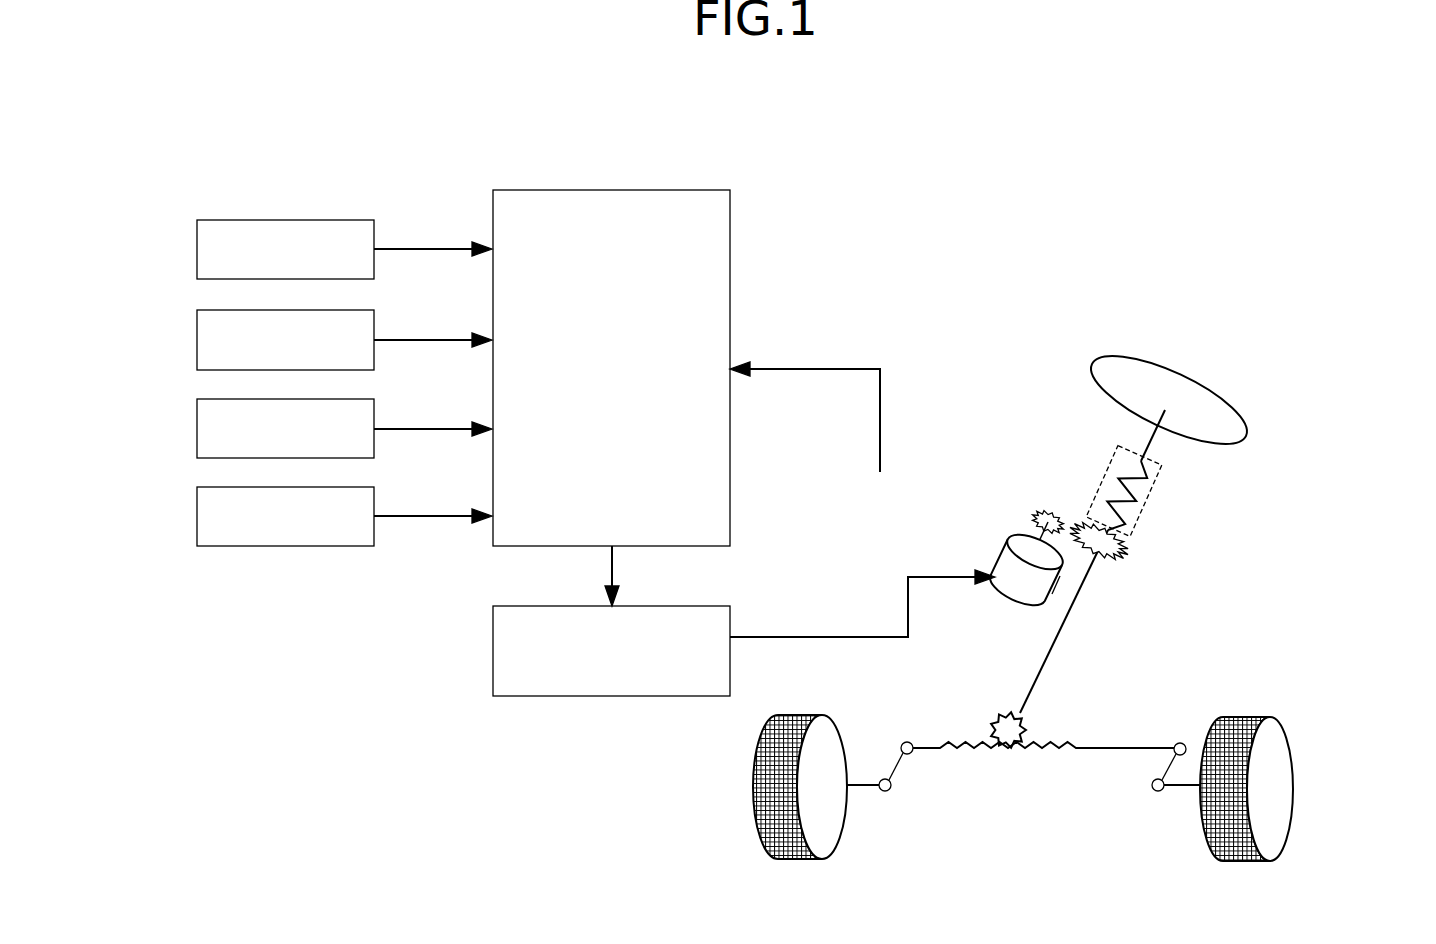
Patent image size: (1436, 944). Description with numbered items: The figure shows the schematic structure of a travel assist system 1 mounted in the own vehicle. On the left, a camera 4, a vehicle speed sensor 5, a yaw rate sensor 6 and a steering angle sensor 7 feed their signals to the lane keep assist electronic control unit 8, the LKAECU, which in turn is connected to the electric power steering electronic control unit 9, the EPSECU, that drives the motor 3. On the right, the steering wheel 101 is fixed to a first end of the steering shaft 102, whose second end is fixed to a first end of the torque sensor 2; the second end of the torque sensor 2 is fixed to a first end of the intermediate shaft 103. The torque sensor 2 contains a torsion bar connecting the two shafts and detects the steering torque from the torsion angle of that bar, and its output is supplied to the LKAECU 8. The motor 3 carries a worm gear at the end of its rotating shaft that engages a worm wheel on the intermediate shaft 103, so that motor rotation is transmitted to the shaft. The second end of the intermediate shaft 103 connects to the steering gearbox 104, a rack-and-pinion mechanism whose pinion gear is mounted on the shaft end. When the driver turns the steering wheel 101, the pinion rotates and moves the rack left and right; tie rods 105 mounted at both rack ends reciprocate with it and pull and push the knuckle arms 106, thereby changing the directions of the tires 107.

The travel assist system 1 is at (878, 98).
The torque sensor 2 is at (1148, 492).
The motor 3 is at (1017, 597).
The camera 4 is at (287, 220).
The vehicle speed sensor 5 is at (287, 310).
The yaw rate sensor 6 is at (287, 399).
The steering angle sensor 7 is at (287, 487).
The lane keep assist electronic control unit 8 is at (700, 190).
The electric power steering electronic control unit 9 is at (672, 606).
The steering wheel 101 is at (1205, 420).
The steering shaft 102 is at (1138, 441).
The intermediate shaft 103 is at (1070, 612).
The steering gearbox 104 is at (1042, 734).
The tie rods 105 is at (933, 753).
The knuckle arms 106 is at (867, 788).
The tires 107 is at (748, 789).